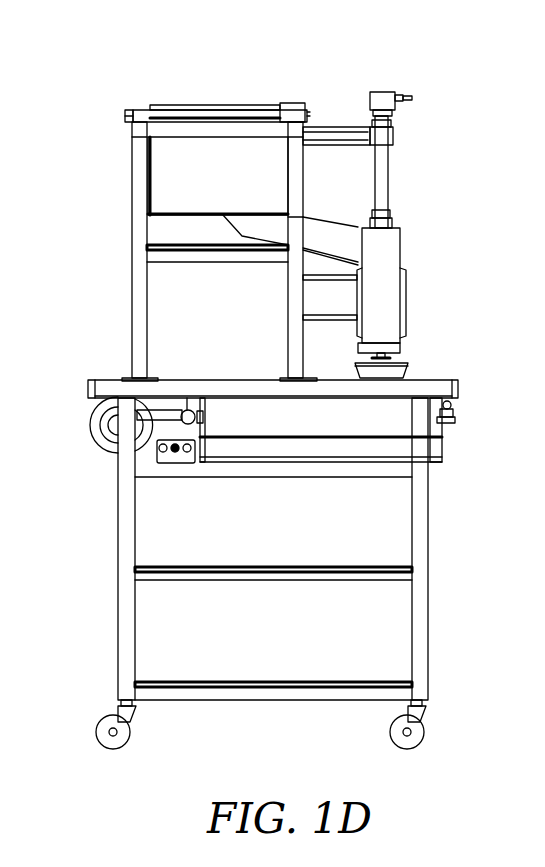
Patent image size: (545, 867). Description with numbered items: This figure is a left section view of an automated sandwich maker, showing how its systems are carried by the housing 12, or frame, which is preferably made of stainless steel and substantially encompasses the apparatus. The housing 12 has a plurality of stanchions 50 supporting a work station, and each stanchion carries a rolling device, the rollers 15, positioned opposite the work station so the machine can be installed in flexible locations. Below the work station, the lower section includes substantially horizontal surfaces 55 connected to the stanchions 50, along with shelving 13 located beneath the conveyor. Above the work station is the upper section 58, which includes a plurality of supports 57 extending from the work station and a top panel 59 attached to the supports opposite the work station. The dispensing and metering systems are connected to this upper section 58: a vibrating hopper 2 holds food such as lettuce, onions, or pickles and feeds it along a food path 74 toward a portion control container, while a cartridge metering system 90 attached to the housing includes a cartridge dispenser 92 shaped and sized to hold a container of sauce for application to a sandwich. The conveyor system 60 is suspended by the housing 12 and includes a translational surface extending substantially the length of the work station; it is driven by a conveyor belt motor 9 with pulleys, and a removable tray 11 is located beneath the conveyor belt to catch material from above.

The vibrating hopper 2 is at (170, 163).
The conveyor belt motor 9 is at (157, 438).
The removable tray 11 is at (352, 460).
The housing 12 is at (443, 552).
The shelving 13 is at (302, 582).
The rollers 15 is at (412, 747).
The stanchions 50 is at (428, 635).
The horizontal surfaces 55 is at (283, 733).
The supports 57 is at (290, 290).
The upper section 58 is at (97, 122).
The top panel 59 is at (125, 117).
The conveyor system 60 is at (97, 435).
The food path 74 is at (333, 228).
The cartridge metering system 90 is at (413, 93).
The cartridge dispenser 92 is at (407, 290).